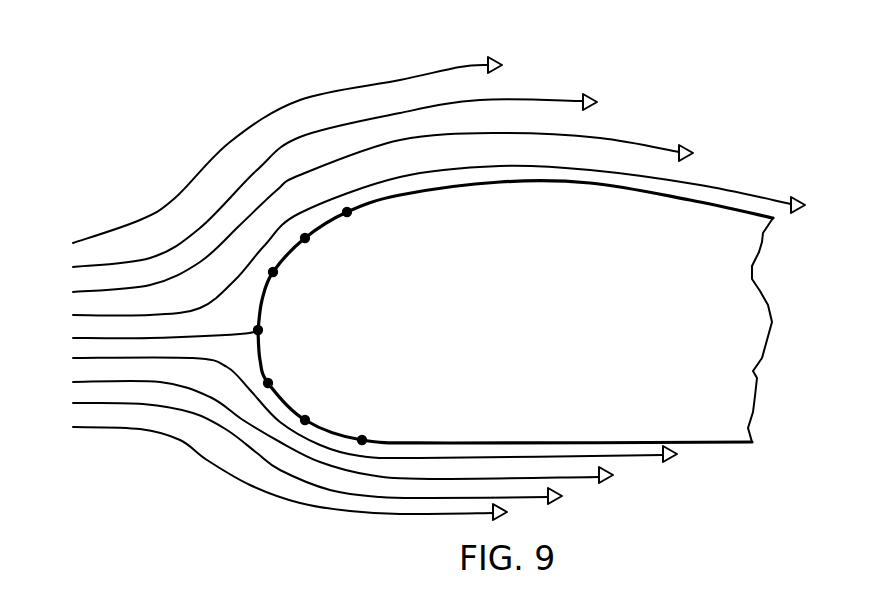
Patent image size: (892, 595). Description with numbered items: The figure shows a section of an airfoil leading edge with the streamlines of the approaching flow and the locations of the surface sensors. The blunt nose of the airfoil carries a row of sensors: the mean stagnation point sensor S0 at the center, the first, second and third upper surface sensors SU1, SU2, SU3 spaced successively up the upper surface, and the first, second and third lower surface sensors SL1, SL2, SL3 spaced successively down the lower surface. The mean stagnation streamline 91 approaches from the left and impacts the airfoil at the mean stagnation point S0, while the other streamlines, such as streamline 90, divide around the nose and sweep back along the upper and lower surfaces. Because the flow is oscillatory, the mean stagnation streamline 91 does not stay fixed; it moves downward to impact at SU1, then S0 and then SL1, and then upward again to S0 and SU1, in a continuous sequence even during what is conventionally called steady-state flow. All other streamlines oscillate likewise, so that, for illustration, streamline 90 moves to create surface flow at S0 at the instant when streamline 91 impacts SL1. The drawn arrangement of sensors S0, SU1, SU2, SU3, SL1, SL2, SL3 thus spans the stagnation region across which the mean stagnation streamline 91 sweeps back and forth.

The streamline 90 is at (300, 214).
The mean stagnation streamline 91 is at (240, 333).
The mean stagnation point sensor S0 is at (274, 330).
The first upper surface sensor SU1 is at (294, 284).
The second upper surface sensor SU2 is at (328, 248).
The third upper surface sensor SU3 is at (371, 222).
The first lower surface sensor SL1 is at (290, 380).
The second lower surface sensor SL2 is at (326, 413).
The third lower surface sensor SL3 is at (384, 433).